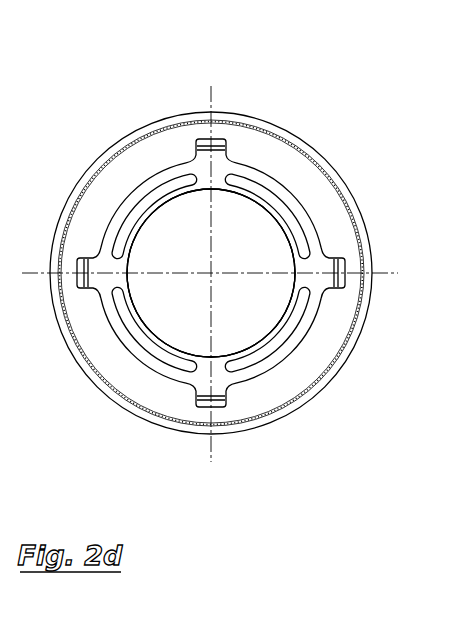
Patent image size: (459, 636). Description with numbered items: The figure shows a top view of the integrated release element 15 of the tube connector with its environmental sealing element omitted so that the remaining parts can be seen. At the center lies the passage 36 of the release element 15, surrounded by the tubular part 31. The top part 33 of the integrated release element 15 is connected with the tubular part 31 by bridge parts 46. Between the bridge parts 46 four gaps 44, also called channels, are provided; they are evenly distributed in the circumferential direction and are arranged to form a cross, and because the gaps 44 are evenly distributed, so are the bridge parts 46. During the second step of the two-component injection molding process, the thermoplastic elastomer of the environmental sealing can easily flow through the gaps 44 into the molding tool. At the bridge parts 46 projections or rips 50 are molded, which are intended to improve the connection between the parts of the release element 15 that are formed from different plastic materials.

The integrated release element 15 is at (187, 103).
The tubular part 31 is at (222, 357).
The top part 33 is at (257, 152).
The passage 36 is at (172, 272).
The gaps 44 is at (198, 143).
The bridge parts 46 is at (115, 213).
The projections or rips 50 is at (178, 184).